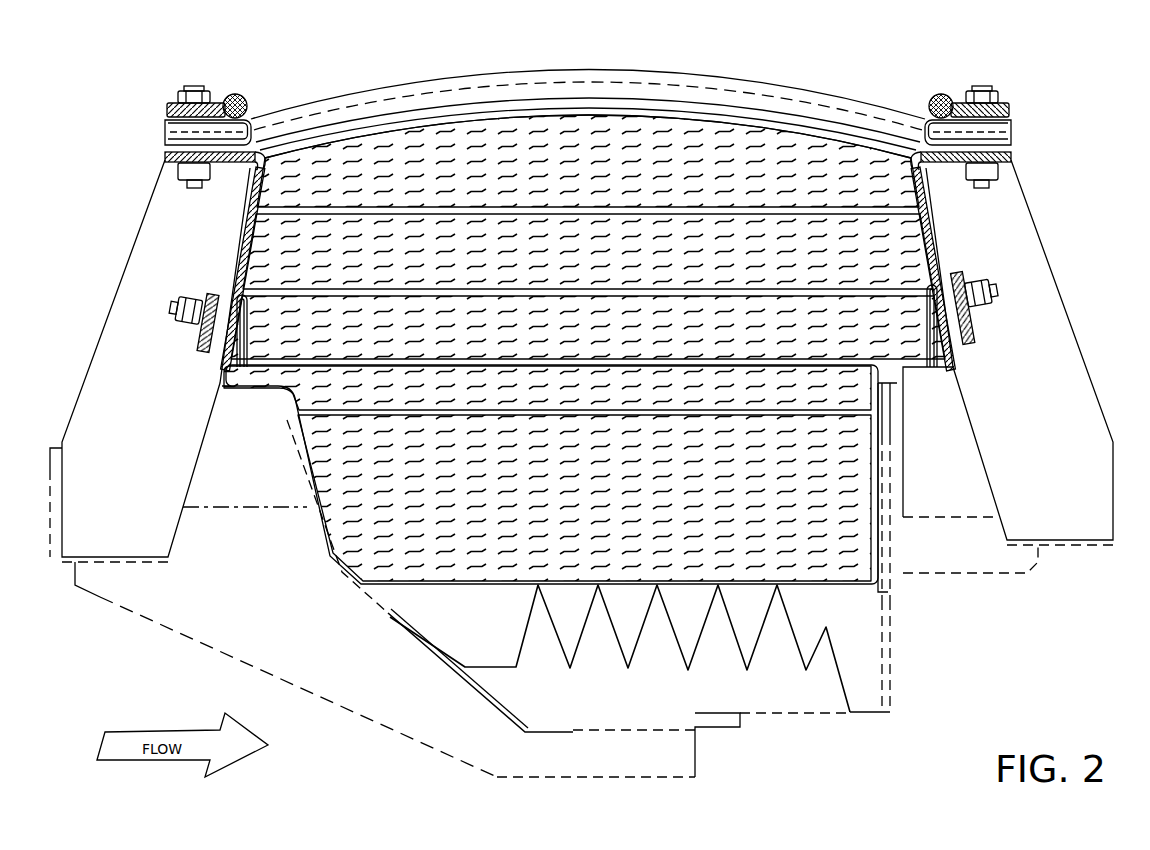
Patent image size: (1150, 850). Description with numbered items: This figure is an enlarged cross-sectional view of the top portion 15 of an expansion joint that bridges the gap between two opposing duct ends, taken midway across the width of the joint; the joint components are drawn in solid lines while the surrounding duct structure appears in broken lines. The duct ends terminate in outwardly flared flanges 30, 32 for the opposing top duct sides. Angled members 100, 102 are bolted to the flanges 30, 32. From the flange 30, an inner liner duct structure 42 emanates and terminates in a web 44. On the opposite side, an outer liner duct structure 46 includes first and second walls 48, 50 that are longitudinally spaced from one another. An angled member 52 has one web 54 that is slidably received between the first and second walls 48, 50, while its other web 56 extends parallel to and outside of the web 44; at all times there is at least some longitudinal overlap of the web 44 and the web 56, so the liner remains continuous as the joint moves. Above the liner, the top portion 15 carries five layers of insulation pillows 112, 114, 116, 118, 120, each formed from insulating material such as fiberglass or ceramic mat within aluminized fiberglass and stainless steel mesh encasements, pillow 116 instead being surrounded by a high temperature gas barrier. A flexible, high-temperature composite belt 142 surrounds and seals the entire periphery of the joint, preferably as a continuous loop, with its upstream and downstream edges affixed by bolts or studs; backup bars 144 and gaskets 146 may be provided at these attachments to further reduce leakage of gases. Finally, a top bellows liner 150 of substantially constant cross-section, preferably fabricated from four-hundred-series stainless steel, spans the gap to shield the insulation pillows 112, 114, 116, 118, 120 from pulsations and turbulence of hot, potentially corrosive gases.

The top portion 15 is at (273, 73).
The flange 30 is at (201, 441).
The flange 32 is at (977, 414).
The inner liner duct structure 42 is at (393, 621).
The web 44 is at (574, 746).
The outer liner duct structure 46 is at (1002, 639).
The first wall 48 is at (897, 498).
The second wall 50 is at (889, 446).
The angled member 52 is at (901, 728).
The web 54 is at (887, 632).
The web 56 is at (812, 718).
The angled member 100 is at (238, 253).
The angled member 102 is at (936, 198).
The insulation pillow 112 is at (443, 511).
The insulation pillow 114 is at (443, 398).
The insulation pillow 116 is at (443, 343).
The insulation pillow 118 is at (443, 273).
The insulation pillow 120 is at (443, 183).
The composite belt 142 is at (584, 82).
The backup bar 144 is at (1010, 116).
The gasket 146 is at (167, 113).
The top bellows liner 150 is at (527, 636).